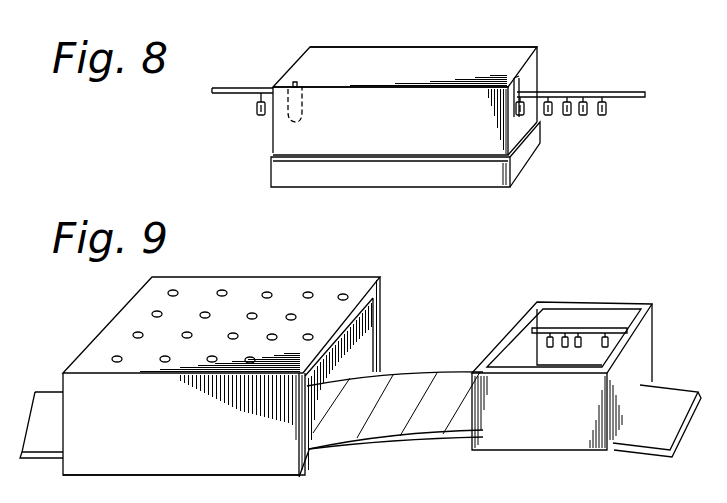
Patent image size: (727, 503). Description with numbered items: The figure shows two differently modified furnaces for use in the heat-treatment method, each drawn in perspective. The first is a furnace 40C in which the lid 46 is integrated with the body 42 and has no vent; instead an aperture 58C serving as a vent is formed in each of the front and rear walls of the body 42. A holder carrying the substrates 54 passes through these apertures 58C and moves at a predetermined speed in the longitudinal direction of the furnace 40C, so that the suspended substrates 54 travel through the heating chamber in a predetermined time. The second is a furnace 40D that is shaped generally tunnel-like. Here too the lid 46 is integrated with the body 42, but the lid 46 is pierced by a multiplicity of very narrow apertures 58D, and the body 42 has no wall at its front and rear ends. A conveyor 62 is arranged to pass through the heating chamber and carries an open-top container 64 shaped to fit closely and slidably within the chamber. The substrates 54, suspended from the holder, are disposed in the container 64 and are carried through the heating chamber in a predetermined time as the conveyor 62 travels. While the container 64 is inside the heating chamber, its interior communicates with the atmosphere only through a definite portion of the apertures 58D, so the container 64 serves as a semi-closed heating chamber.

In FIG. 8, the furnace 40C is at (546, 62).
In FIG. 9, the furnace 40D is at (385, 311).
In FIG. 8, the body 42 is at (463, 140).
In FIG. 9, the body 42 is at (265, 457).
In FIG. 8, the lid 46 is at (505, 57).
In FIG. 8, the substrates 54 is at (607, 108).
In FIG. 8, the aperture 58C is at (284, 118).
In FIG. 9, the apertures 58D is at (270, 292).
In FIG. 9, the conveyor 62 is at (389, 424).
In FIG. 9, the open-top container 64 is at (656, 318).